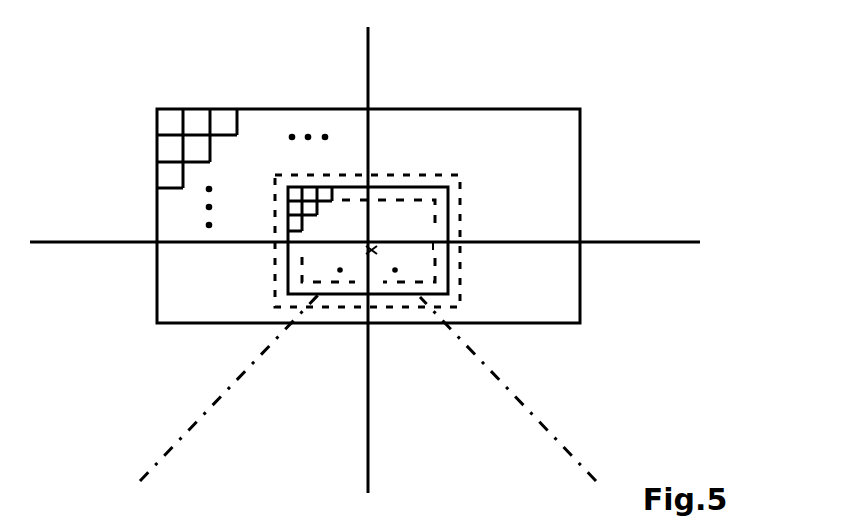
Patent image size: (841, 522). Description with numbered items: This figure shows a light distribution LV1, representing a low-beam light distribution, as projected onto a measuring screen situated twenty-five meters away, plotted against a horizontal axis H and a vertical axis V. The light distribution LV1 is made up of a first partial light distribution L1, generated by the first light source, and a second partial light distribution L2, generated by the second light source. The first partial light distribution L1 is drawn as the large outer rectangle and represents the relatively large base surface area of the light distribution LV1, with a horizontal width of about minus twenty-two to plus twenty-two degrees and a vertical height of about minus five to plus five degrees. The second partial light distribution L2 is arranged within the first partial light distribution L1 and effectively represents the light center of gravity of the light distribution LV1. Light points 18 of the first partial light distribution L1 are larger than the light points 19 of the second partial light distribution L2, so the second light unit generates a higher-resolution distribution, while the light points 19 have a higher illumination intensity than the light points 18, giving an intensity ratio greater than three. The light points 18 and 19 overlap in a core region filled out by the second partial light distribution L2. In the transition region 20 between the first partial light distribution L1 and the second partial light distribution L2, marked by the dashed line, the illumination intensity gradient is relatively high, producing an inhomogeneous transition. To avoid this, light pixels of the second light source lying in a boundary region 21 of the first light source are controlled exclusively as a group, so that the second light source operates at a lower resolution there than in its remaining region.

The light points 18 is at (193, 118).
The light points 19 is at (321, 193).
The transition region 20 is at (427, 173).
The boundary region 21 is at (368, 407).
The first partial light distribution L1 is at (560, 150).
The second partial light distribution L2 is at (450, 290).
The light distribution LV1 is at (106, 96).
The horizontal axis H is at (367, 261).
The vertical axis V is at (359, 246).